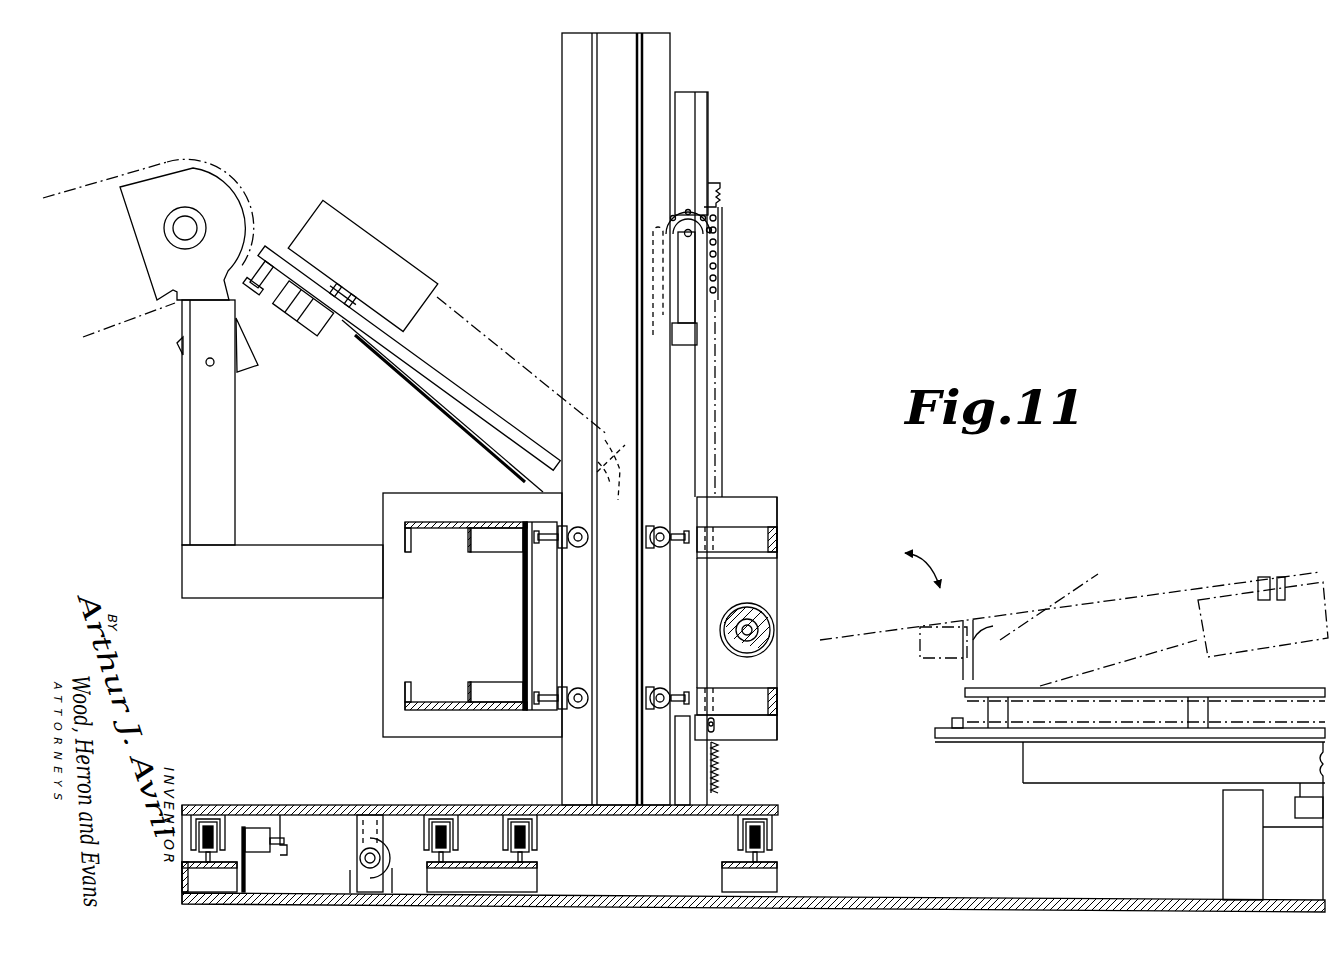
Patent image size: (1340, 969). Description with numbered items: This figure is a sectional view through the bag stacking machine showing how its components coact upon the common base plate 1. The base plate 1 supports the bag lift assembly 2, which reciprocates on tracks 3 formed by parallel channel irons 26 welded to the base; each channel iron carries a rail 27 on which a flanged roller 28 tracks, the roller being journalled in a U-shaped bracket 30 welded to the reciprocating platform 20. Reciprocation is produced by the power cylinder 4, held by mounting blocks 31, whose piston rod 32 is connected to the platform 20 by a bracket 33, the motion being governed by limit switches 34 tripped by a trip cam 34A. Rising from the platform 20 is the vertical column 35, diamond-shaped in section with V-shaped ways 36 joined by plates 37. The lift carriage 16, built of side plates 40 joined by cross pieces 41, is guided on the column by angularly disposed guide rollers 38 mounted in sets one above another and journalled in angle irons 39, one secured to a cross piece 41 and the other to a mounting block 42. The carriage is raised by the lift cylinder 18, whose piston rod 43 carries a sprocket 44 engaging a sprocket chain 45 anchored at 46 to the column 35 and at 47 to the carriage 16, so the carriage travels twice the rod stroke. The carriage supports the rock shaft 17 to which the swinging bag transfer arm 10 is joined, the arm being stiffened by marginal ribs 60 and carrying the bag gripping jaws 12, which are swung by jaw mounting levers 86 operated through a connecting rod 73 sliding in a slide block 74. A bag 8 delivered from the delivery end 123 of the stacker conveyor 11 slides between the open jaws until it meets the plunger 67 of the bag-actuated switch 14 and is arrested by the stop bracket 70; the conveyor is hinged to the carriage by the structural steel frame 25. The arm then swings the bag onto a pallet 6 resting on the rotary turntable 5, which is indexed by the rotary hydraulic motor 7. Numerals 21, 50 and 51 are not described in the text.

The base plate 1 is at (828, 896).
The bag lift assembly 2 is at (538, 140).
The tracks 3 is at (793, 875).
The power cylinder 4 is at (357, 877).
The rotary turntable 5 is at (964, 736).
The pallet 6 is at (1075, 671).
The rotary hydraulic motor 7 is at (1174, 821).
The bag 8 is at (532, 356).
The bag transfer arm 10 is at (462, 383).
The bag stacker conveyor 11 is at (185, 142).
The bag gripping jaws 12 is at (412, 280).
The bag-actuated switch 14 is at (932, 650).
The lift carriage 16 is at (400, 640).
The rock shaft 17 is at (773, 616).
The lift cylinder 18 is at (683, 438).
The reciprocating platform 20 is at (327, 805).
The chain 21 is at (720, 265).
The structural steel frame 25 is at (223, 451).
The channel irons 26 is at (540, 877).
The rail 27 is at (630, 886).
The flanged roller 28 is at (210, 822).
The U-shaped brackets 30 is at (196, 815).
The mounting blocks 31 is at (353, 901).
The piston rod 32 is at (360, 858).
The bracket 33 is at (373, 823).
The limit switches 34 is at (252, 860).
The switch actuating trip cam 34A is at (288, 850).
The vertical column 35 is at (655, 52).
The V-shaped ways 36 is at (662, 77).
The plates 37 is at (598, 192).
The guide rollers 38 is at (647, 540).
The angle irons 39 is at (677, 610).
The side plates 40 is at (466, 616).
The cross pieces 41 is at (790, 710).
The mounting block 42 is at (742, 533).
The piston rod 43 is at (688, 305).
The sprocket 44 is at (702, 233).
The sprocket chain 45 is at (722, 212).
The chain anchorage 46 is at (648, 340).
The chain anchorage 47 is at (717, 725).
The housing 50 is at (702, 167).
The bracket 51 is at (724, 190).
The marginal ribs 60 is at (487, 437).
The plunger 67 is at (606, 500).
The stop bracket 70 is at (614, 452).
The connecting rod 73 is at (367, 362).
The slide block 74 is at (272, 297).
The jaw mounting levers 86 is at (347, 284).
The delivery end 123 is at (233, 135).